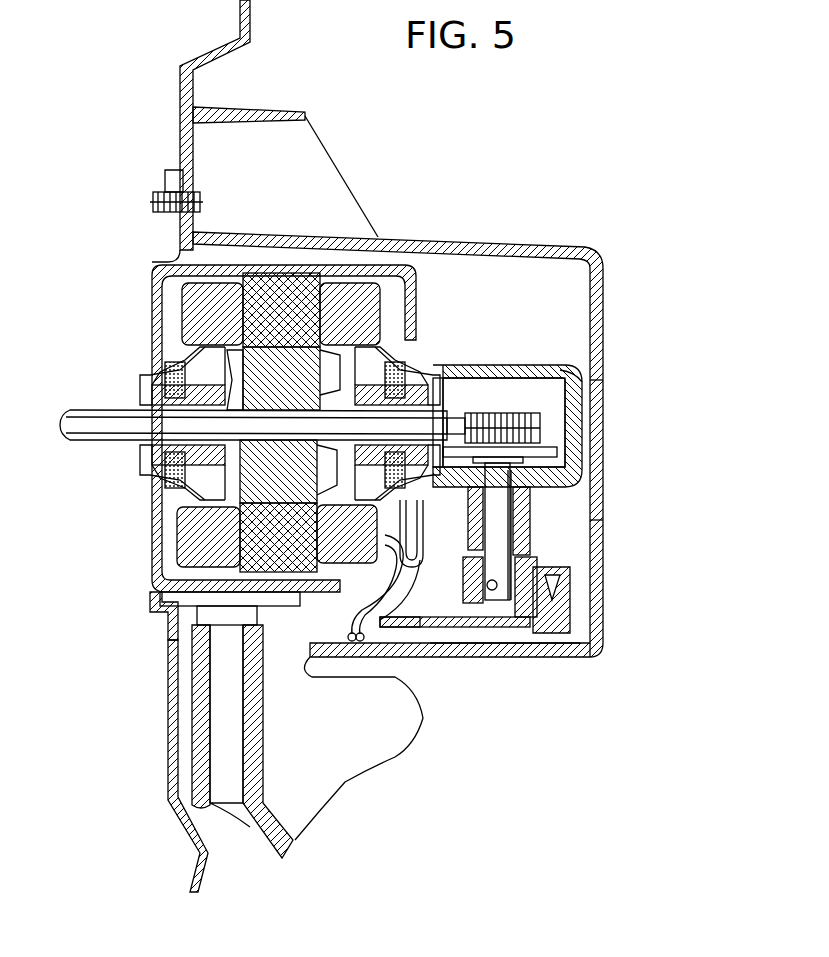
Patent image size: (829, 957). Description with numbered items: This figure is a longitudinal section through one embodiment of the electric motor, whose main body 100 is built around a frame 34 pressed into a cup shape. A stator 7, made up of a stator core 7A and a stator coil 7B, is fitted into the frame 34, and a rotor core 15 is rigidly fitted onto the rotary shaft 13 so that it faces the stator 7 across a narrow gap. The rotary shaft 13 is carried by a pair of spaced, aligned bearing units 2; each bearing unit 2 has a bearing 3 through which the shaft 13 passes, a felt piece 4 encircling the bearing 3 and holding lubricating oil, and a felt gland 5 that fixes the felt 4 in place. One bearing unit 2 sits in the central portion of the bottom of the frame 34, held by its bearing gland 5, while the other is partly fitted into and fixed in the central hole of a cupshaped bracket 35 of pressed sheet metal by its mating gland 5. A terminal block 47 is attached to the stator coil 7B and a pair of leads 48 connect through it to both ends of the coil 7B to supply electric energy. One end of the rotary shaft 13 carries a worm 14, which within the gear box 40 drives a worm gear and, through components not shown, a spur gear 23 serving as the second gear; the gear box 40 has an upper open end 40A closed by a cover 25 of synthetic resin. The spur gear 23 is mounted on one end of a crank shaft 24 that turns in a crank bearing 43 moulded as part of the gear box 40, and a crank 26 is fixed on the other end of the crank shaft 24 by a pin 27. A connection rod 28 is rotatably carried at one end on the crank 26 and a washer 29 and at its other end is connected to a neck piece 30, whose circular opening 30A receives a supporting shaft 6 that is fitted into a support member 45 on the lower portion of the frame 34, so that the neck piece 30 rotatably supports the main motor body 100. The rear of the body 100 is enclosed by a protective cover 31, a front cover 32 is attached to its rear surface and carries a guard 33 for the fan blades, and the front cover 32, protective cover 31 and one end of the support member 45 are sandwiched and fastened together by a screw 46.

The bearing unit 2 is at (145, 375).
The bearing 3 is at (152, 455).
The felt piece 4 is at (170, 478).
The felt gland 5 is at (378, 365).
The supporting shaft 6 is at (228, 718).
The stator 7 is at (205, 297).
The stator core 7A is at (275, 283).
The stator coil 7B is at (225, 290).
The rotary shaft 13 is at (85, 412).
The worm 14 is at (540, 432).
The rotor core 15 is at (240, 356).
The spur gear 23 is at (527, 478).
The crank shaft 24 is at (512, 540).
The cover 25 is at (532, 365).
The crank 26 is at (562, 585).
The pin 27 is at (515, 600).
The connection rod 28 is at (490, 648).
The washer 29 is at (580, 643).
The neck piece 30 is at (340, 760).
The circular opening 30A is at (245, 708).
The protective cover 31 is at (590, 385).
The front cover 32 is at (152, 262).
The guard 33 is at (163, 795).
The frame 34 is at (170, 245).
The cupshaped bracket 35 is at (396, 627).
The gear box 40 is at (575, 478).
The upper open end 40A is at (560, 368).
The crank bearing 43 is at (592, 522).
The support member 45 is at (152, 604).
The screw 46 is at (160, 200).
The terminal block 47 is at (368, 628).
The leads 48 is at (445, 627).
The main body 100 is at (342, 248).